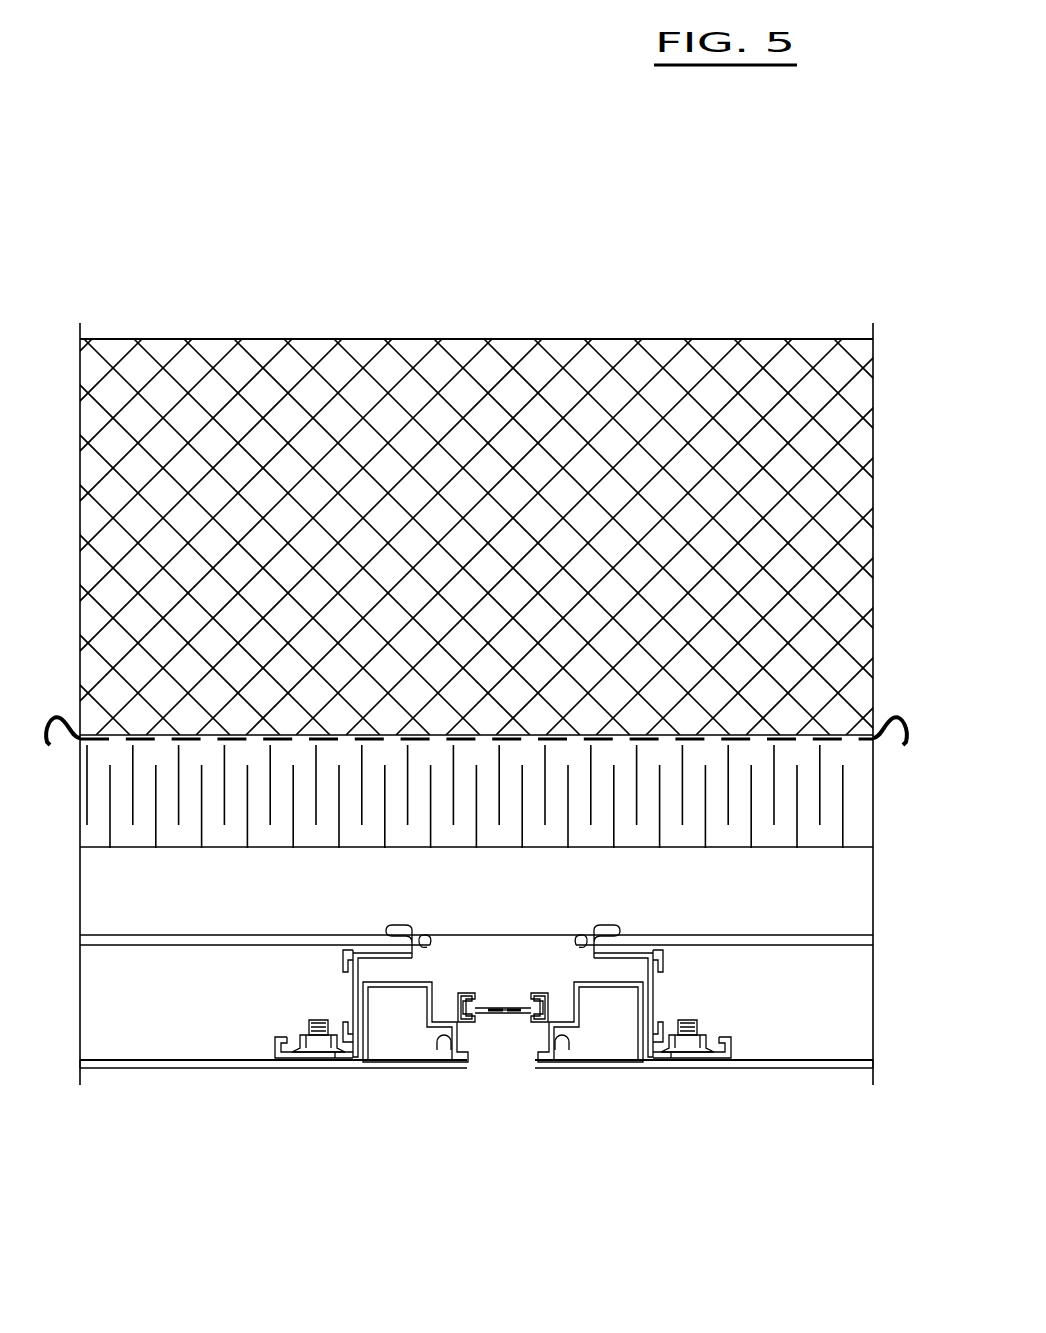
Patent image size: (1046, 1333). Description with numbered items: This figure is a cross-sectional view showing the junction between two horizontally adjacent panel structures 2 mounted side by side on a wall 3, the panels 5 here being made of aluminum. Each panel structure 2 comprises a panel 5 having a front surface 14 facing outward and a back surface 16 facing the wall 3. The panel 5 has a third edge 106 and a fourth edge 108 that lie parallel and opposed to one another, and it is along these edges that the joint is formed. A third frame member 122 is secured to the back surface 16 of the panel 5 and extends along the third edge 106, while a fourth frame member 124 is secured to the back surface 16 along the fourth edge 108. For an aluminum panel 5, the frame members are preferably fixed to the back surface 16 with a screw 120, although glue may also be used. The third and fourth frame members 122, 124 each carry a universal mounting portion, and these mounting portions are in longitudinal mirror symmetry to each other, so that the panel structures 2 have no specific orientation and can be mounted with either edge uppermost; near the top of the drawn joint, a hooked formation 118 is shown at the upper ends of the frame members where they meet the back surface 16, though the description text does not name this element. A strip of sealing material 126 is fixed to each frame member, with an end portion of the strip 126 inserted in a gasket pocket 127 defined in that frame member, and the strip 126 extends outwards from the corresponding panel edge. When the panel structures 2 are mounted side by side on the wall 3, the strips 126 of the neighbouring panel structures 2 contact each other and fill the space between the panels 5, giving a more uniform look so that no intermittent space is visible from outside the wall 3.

The panel structure 2 is at (478, 1097).
The wall 3 is at (609, 345).
The panel 5 is at (152, 1080).
The front surface 14 is at (215, 1069).
The back surface 16 is at (198, 1058).
The third edge 106 is at (457, 1066).
The fourth edge 108 is at (537, 1065).
The hook 118 is at (606, 927).
The screw 120 is at (313, 1035).
The third frame member 122 is at (342, 985).
The fourth frame member 124 is at (664, 985).
The strip of sealing material 126 is at (488, 1013).
The gasket pocket 127 is at (540, 993).